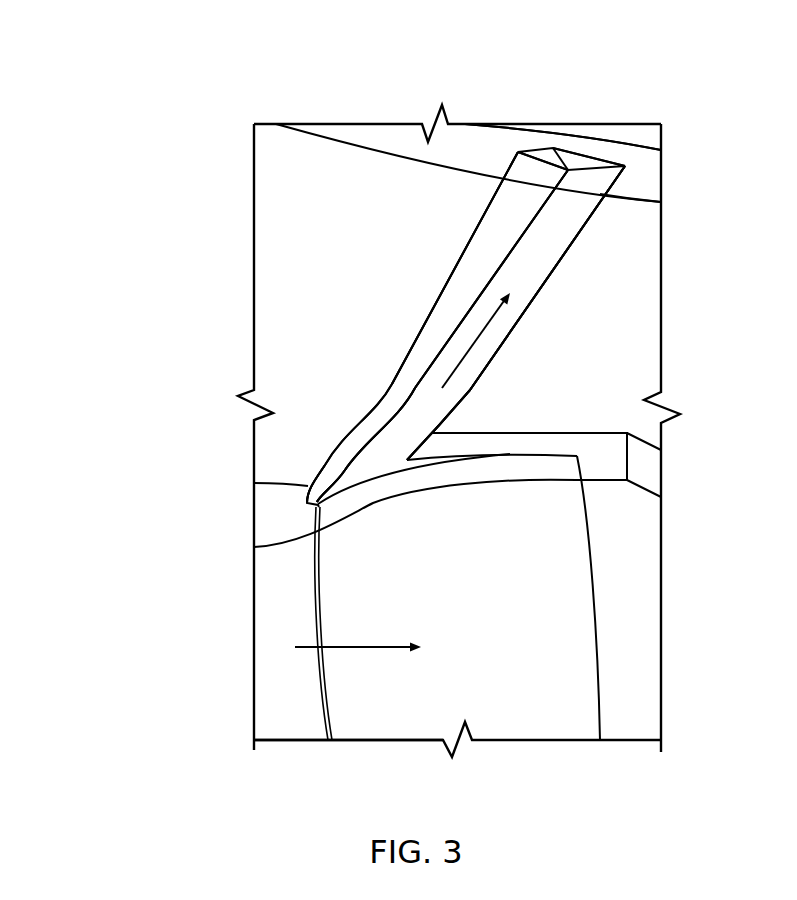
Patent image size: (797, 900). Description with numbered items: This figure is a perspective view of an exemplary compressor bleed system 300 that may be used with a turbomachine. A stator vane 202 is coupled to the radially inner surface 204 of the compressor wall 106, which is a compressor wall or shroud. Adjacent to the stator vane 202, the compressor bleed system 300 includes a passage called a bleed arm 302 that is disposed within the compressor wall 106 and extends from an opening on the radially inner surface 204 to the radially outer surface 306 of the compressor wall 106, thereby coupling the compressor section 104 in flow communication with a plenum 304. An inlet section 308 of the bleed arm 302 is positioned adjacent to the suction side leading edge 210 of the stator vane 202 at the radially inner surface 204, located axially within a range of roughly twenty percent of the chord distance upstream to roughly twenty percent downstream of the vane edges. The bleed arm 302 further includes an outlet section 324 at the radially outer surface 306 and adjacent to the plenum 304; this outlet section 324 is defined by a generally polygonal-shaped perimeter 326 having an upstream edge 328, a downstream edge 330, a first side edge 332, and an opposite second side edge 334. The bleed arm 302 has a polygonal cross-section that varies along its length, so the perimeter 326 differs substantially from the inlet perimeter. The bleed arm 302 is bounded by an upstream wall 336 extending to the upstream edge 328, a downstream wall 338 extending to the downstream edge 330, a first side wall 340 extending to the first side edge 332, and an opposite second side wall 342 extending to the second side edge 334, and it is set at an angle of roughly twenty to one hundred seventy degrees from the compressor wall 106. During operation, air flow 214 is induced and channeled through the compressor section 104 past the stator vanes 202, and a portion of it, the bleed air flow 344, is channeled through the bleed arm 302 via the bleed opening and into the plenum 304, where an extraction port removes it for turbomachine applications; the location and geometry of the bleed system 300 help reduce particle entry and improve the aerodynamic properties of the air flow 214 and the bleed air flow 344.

The compressor bleed system 300 is at (182, 77).
The compressor wall 106 is at (316, 137).
The compressor section 104 is at (298, 693).
The stator vane 202 is at (550, 671).
The radially inner surface 204 is at (589, 466).
The leading edge 210 is at (315, 593).
The air flow 214 is at (375, 647).
The bleed arm 302 is at (465, 247).
The plenum 304 is at (643, 141).
The radially outer surface 306 is at (645, 165).
The inlet section 308 is at (333, 452).
The outlet section 324 is at (588, 225).
The perimeter 326 is at (528, 156).
The upstream edge 328 is at (518, 160).
The downstream edge 330 is at (580, 152).
The first side edge 332 is at (643, 199).
The second side edge 334 is at (537, 152).
The upstream wall 336 is at (463, 312).
The downstream wall 338 is at (584, 249).
The first side wall 340 is at (553, 242).
The second side wall 342 is at (485, 205).
The bleed air flow 344 is at (503, 312).